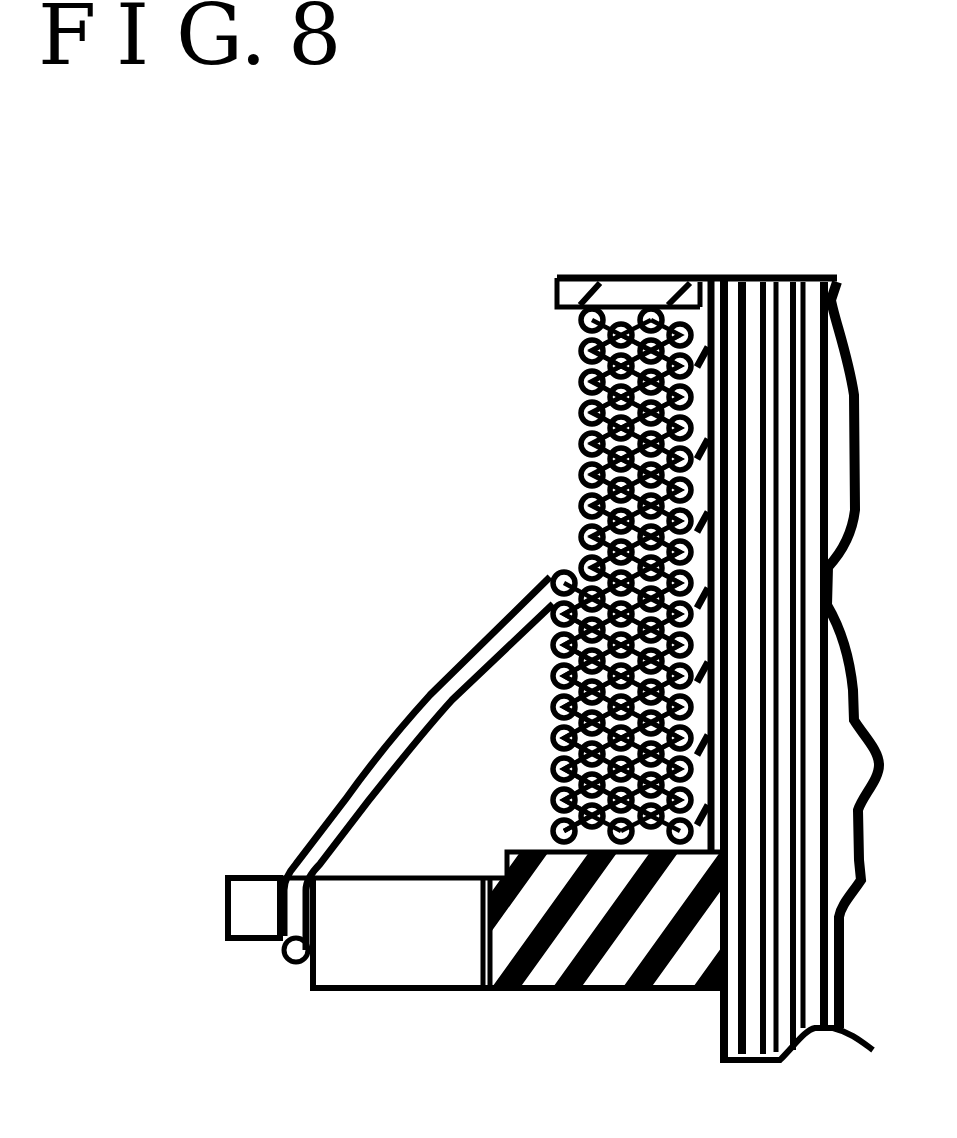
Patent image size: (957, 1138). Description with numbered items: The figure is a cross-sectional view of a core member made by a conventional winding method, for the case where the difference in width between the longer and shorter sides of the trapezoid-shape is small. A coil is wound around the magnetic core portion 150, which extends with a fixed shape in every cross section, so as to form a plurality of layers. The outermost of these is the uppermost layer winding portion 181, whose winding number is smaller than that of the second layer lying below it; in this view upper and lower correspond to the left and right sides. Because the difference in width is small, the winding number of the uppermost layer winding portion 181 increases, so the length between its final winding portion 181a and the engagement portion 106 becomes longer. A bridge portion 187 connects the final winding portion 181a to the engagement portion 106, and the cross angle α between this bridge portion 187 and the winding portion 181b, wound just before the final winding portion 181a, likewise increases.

The magnetic core portion 150 is at (783, 278).
The uppermost layer winding portion 181 is at (553, 545).
The final winding portion 181a is at (551, 576).
The winding portion wound before the final winding portion 181b is at (556, 602).
The bridge portion 187 is at (340, 798).
The engagement portion 106 is at (383, 955).